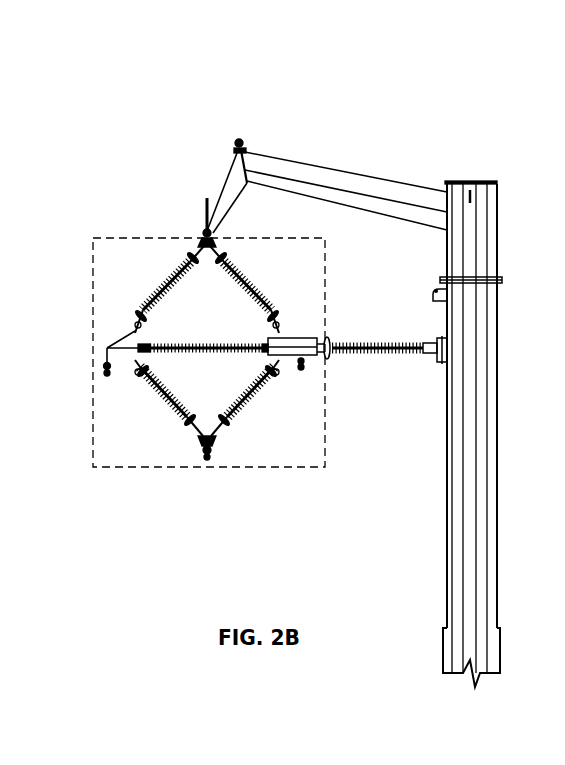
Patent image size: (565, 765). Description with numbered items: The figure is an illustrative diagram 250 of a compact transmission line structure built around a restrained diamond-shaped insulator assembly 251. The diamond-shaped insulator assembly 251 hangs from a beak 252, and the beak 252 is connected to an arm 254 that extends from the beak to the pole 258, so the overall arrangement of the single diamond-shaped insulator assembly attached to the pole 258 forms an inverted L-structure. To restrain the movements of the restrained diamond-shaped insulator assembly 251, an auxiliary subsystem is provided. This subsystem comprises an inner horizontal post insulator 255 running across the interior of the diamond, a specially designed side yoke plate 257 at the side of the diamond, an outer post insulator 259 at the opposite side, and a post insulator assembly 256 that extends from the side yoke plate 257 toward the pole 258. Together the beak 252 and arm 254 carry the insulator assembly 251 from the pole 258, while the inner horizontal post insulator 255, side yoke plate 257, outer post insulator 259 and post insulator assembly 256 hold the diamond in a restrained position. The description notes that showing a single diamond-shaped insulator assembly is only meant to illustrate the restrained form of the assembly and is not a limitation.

The illustrative diagram 250 is at (186, 86).
The restrained diamond-shaped insulator assembly 251 is at (153, 237).
The beak 252 is at (225, 173).
The arm 254 is at (325, 165).
The inner horizontal post insulator 255 is at (188, 346).
The post insulator assembly 256 is at (362, 343).
The side yoke plate 257 is at (300, 338).
The pole 258 is at (497, 365).
The outer post insulator 259 is at (107, 348).